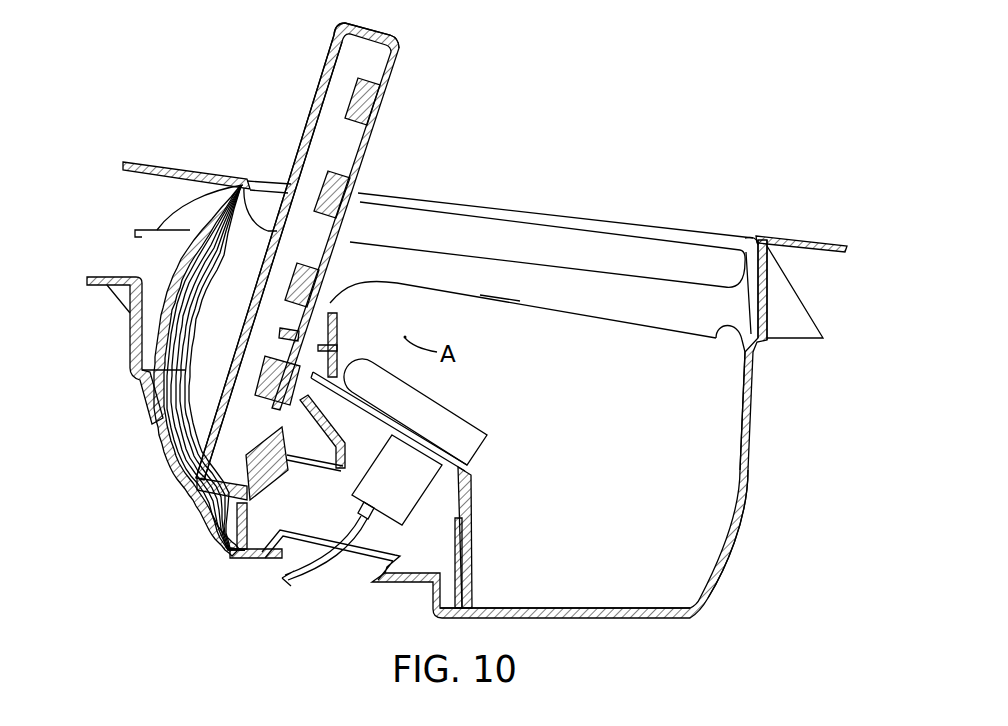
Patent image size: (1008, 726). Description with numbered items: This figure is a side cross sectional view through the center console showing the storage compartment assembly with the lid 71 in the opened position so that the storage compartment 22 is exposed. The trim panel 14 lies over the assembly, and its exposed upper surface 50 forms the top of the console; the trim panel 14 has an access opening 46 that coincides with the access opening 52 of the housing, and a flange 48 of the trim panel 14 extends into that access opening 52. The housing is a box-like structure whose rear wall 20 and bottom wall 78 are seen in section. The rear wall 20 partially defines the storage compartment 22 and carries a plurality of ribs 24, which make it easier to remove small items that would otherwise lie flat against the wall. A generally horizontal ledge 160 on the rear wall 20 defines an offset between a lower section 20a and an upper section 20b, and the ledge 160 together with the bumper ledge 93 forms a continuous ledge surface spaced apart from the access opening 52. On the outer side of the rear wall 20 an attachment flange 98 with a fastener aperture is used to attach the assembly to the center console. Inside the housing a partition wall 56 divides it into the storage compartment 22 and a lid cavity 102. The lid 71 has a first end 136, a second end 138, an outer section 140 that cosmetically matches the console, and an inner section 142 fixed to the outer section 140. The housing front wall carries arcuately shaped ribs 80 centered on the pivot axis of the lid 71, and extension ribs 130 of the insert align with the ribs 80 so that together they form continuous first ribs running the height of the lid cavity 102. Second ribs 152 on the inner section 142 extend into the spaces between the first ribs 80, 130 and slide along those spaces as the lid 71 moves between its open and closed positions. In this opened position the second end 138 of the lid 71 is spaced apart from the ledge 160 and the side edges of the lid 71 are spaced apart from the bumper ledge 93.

The trim panel 14 is at (800, 242).
The rear wall 20 is at (743, 510).
The lower section of the rear wall 20a is at (727, 547).
The upper section of the rear wall 20b is at (767, 287).
The storage compartment 22 is at (680, 472).
The ribs 24 is at (749, 317).
The access opening 46 is at (673, 233).
The flange 48 is at (745, 246).
The upper surface 50 is at (173, 163).
The access opening 52 is at (608, 250).
The partition wall 56 is at (468, 548).
The lid 71 is at (330, 46).
The bottom wall 78 is at (593, 607).
The ribs 80 is at (162, 459).
The bumper ledge 93 is at (505, 300).
The attachment flange 98 is at (790, 317).
The lid cavity 102 is at (232, 278).
The extension ribs 130 is at (217, 220).
The first end 136 is at (188, 512).
The second end 138 is at (386, 42).
The outer section 140 is at (318, 85).
The inner section 142 is at (382, 97).
The second ribs 152 is at (235, 558).
The ledge 160 is at (735, 330).